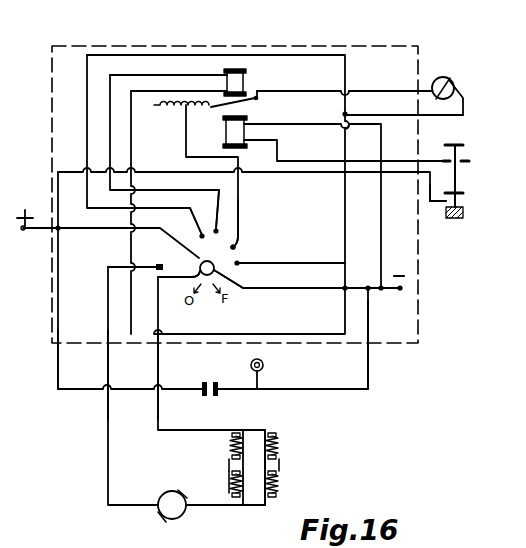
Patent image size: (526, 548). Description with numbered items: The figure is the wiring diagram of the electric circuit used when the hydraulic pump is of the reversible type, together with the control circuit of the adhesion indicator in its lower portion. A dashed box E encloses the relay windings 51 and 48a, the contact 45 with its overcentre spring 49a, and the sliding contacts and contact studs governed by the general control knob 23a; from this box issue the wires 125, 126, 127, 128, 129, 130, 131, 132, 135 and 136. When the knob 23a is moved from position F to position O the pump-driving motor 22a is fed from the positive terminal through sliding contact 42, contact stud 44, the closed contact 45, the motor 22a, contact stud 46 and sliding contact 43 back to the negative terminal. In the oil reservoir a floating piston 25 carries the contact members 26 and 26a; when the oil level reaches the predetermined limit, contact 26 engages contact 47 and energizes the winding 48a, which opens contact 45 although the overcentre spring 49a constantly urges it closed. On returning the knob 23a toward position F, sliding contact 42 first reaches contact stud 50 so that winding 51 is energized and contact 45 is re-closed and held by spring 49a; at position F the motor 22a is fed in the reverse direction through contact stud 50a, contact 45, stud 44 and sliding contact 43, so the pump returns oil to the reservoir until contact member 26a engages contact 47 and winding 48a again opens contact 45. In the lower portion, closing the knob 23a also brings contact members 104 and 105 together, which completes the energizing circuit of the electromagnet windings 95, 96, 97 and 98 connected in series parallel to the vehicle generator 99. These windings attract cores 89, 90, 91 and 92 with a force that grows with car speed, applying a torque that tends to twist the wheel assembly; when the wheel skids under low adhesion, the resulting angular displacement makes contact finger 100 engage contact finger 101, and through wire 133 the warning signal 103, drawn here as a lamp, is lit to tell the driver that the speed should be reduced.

The box E is at (400, 50).
The wire 125 is at (27, 232).
The wire 126 is at (58, 364).
The wire 127 is at (107, 352).
The wire 128 is at (157, 352).
The wire 129 is at (366, 362).
The wire 130 is at (395, 292).
The overcentre spring 49a is at (172, 108).
The contact 45 is at (262, 79).
The winding 51 is at (240, 84).
The winding 48a is at (226, 133).
The pump-driving motor 22a is at (452, 82).
The wire 135 is at (366, 91).
The wire 136 is at (378, 114).
The wire 131 is at (431, 157).
The contact member 26 is at (460, 143).
The contact 47 is at (465, 158).
The contact member 26a is at (463, 193).
The floating piston 25 is at (463, 216).
The wire 132 is at (436, 207).
The control knob 23a is at (207, 277).
The contact stud 50a is at (196, 236).
The contact stud 50 is at (220, 227).
The sliding contact 42 is at (238, 238).
The contact stud 44 is at (242, 247).
The sliding contact 43 is at (252, 262).
The contact stud 46 is at (251, 287).
The contact member 105 is at (158, 264).
The contact member 104 is at (184, 273).
The contact finger 100 is at (205, 382).
The contact finger 101 is at (216, 382).
The wire 133 is at (233, 393).
The warning signal 103 is at (268, 365).
The core 89 is at (246, 434).
The core 90 is at (272, 436).
The core 91 is at (268, 505).
The winding 95 is at (232, 450).
The winding 96 is at (279, 451).
The winding 97 is at (278, 489).
The winding 98 is at (232, 488).
The core 92 is at (232, 494).
The generator 99 is at (181, 519).